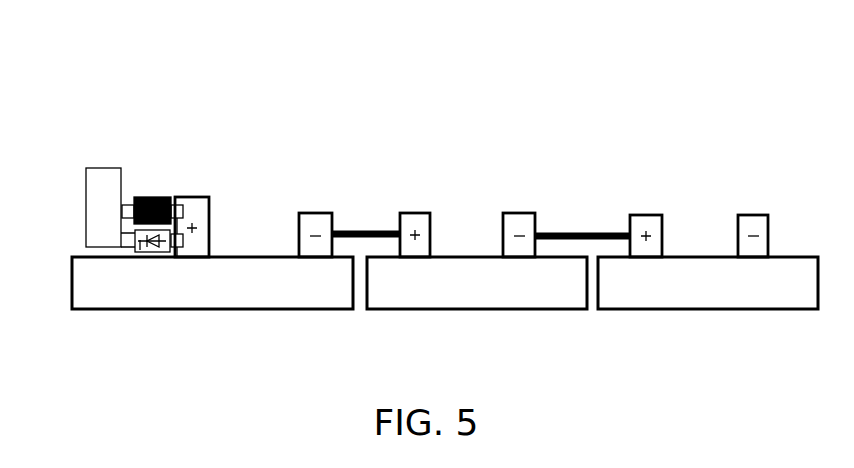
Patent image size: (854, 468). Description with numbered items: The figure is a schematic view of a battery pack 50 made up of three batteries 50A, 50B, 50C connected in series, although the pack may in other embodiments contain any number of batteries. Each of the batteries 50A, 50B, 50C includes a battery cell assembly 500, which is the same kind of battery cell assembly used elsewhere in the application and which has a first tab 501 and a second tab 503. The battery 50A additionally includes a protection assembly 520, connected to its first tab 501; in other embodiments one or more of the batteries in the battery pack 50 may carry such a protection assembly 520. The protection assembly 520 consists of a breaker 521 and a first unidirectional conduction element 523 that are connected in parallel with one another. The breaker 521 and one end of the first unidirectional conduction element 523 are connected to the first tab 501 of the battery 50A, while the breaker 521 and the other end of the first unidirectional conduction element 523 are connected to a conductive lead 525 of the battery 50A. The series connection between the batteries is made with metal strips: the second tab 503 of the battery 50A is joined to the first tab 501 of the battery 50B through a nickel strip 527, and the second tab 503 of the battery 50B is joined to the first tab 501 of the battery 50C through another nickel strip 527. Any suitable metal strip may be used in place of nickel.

The battery pack 50 is at (436, 33).
The battery 50A is at (212, 283).
The battery 50B is at (477, 283).
The battery 50C is at (708, 283).
The battery cell assembly 500 is at (366, 163).
The first tab 501 is at (190, 197).
The second tab 503 is at (306, 213).
The protection assembly 520 is at (143, 172).
The breaker 521 is at (143, 198).
The first unidirectional conduction element 523 is at (140, 252).
The conductive lead 525 is at (94, 220).
The nickel strip 527 is at (568, 232).